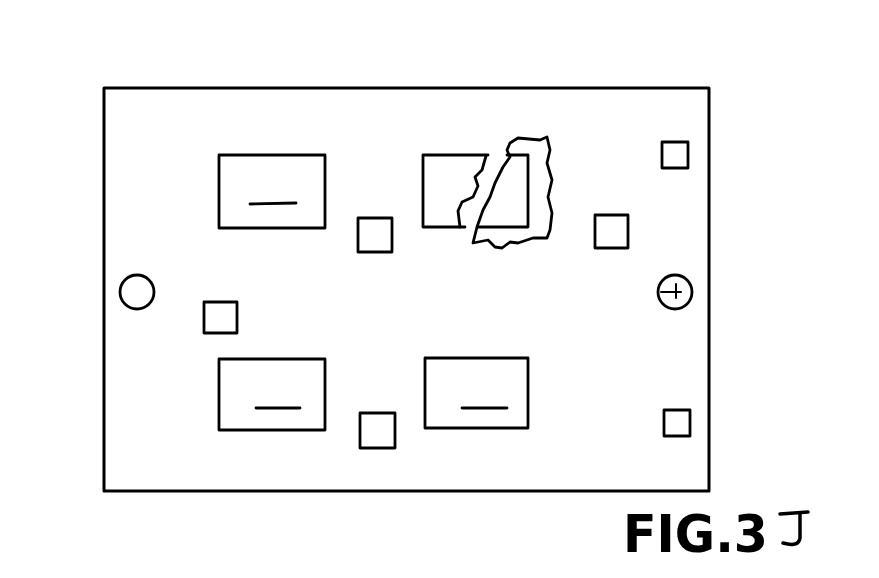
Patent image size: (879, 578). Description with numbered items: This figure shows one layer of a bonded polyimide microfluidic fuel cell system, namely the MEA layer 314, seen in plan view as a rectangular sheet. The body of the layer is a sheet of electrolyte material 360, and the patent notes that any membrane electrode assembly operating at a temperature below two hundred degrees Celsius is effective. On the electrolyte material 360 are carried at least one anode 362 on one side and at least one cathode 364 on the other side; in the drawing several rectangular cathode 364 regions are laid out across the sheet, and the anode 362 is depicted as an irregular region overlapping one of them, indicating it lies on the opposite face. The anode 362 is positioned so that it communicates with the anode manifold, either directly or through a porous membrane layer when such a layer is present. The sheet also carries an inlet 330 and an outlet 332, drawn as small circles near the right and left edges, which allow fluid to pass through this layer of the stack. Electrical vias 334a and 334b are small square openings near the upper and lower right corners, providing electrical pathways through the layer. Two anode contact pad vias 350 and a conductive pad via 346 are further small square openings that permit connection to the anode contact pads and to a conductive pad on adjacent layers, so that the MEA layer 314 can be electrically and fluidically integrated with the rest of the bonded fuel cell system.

The MEA layer 314 is at (306, 68).
The cathode 364 is at (452, 173).
The anode 362 is at (515, 182).
The electrical via 334a is at (680, 160).
The electrical via 334b is at (687, 420).
The inlet 330 is at (689, 294).
The outlet 332 is at (137, 294).
The conductive pad via 346 is at (617, 237).
The anode contact pad via 350 is at (378, 422).
The electrolyte material 360 is at (632, 460).